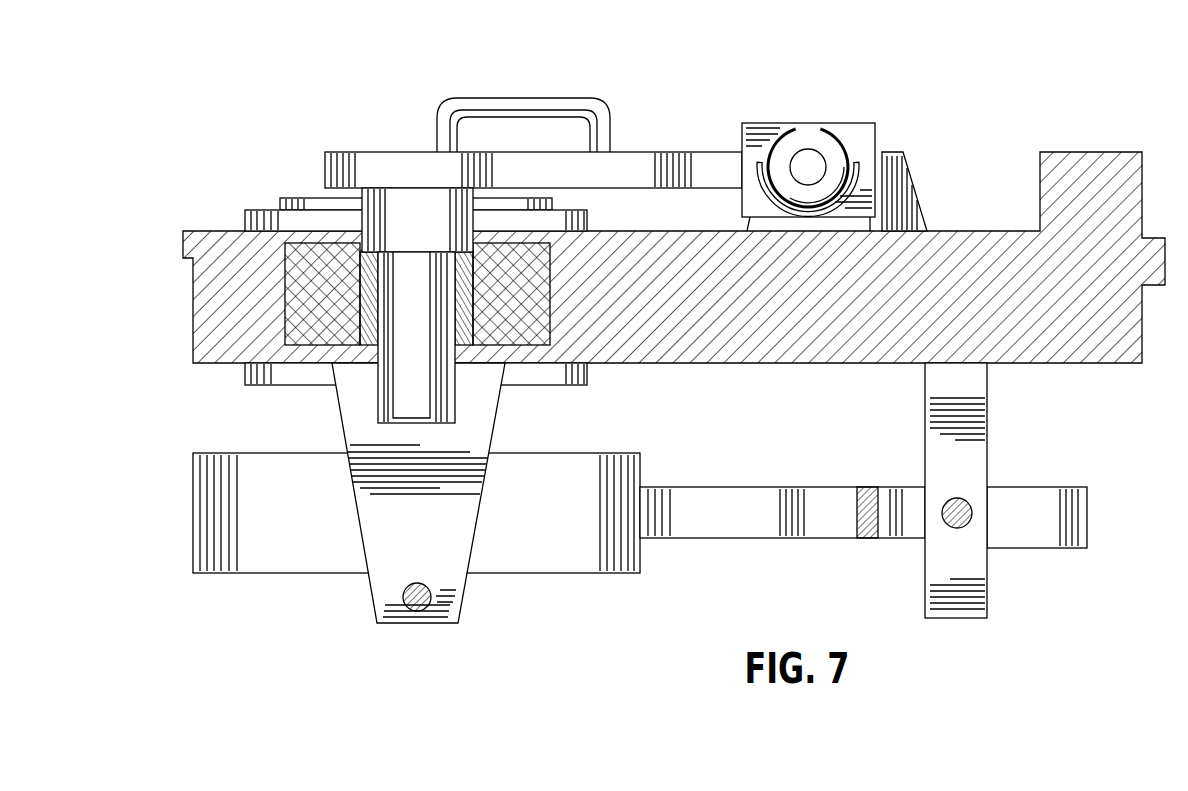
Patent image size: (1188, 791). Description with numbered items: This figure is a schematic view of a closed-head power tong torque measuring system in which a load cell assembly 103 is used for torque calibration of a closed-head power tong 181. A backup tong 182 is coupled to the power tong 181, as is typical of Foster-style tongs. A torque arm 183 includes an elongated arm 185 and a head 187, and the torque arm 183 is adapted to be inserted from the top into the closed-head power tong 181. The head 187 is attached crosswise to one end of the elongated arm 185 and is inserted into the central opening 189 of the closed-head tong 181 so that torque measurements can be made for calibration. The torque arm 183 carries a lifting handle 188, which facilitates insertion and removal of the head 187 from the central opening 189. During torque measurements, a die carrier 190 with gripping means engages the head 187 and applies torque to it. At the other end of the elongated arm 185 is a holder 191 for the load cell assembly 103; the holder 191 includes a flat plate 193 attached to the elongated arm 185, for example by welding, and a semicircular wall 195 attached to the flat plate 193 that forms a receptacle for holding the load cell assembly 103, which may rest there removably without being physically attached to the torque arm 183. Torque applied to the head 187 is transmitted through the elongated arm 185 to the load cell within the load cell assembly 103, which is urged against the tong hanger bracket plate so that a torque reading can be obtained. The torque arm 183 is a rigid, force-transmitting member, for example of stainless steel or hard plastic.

The closed-head power tong 181 is at (176, 242).
The backup tong 182 is at (593, 572).
The torque arm 183 is at (362, 148).
The elongated arm 185 is at (647, 154).
The head 187 is at (380, 393).
The lifting handle 188 is at (515, 103).
The central opening 189 is at (370, 292).
The die carrier 190 is at (466, 344).
The holder 191 is at (764, 112).
The load cell assembly 103 is at (811, 122).
The flat plate 193 is at (862, 130).
The semicircular wall 195 is at (858, 190).